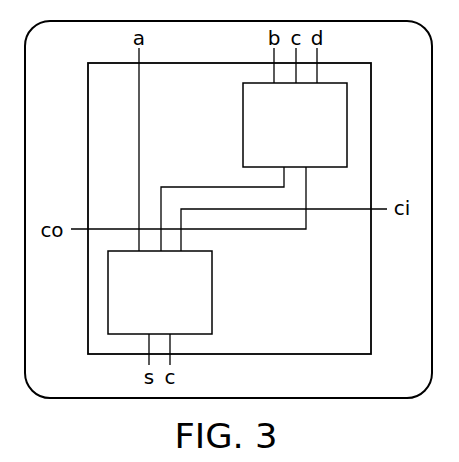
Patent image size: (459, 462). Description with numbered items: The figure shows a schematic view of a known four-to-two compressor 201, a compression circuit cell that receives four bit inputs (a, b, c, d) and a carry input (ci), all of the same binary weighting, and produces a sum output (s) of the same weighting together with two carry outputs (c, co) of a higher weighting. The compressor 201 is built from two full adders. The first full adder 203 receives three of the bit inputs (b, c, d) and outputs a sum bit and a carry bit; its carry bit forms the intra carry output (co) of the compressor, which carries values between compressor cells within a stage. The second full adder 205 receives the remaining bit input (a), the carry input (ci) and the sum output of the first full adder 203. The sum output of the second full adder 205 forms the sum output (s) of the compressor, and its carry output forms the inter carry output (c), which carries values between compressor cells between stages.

The 4:2 compressor 201 is at (302, 276).
The first full adder 203 is at (243, 125).
The second full adder 205 is at (212, 293).